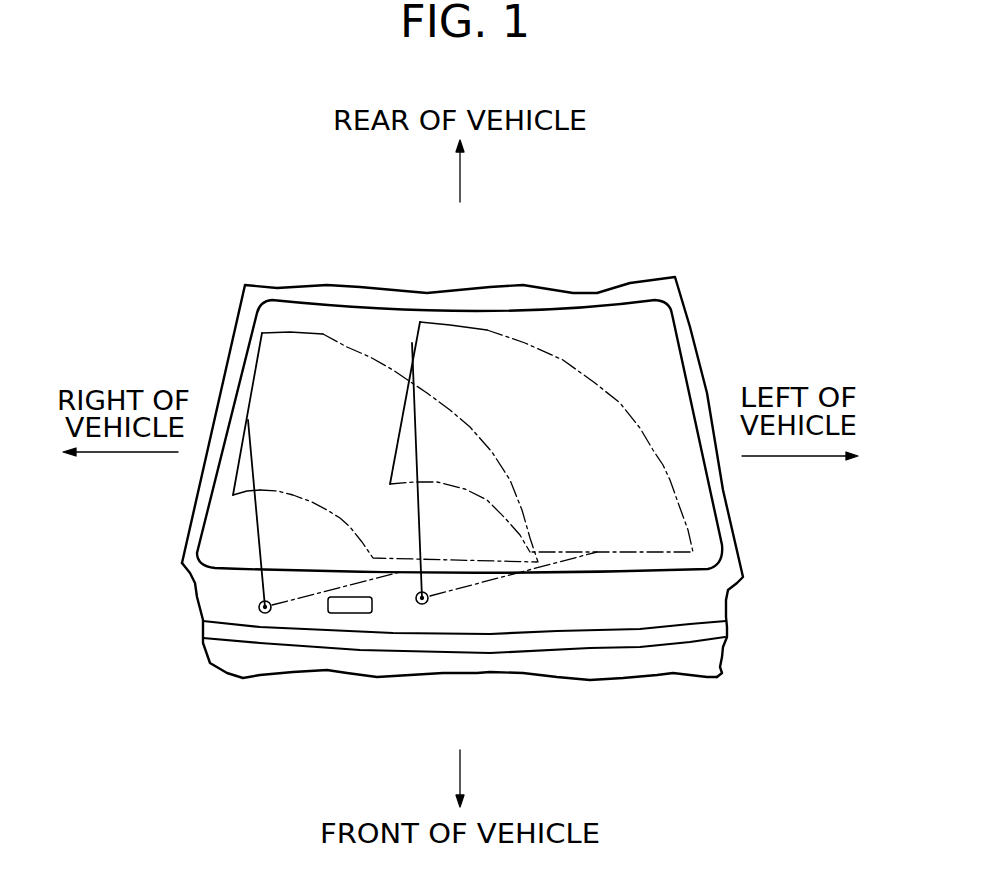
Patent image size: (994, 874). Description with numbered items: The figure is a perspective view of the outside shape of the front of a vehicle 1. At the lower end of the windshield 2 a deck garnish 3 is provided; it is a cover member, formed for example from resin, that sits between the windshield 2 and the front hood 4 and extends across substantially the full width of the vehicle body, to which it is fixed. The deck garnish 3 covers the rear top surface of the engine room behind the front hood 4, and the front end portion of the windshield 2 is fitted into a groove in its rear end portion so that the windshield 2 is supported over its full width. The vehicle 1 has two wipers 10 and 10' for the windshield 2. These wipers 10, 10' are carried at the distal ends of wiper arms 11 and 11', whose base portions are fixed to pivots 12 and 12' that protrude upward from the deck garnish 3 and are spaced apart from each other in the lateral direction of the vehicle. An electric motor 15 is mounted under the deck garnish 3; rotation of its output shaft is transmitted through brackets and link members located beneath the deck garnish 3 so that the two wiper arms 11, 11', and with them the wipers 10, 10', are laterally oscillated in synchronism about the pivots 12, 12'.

The vehicle 1 is at (349, 256).
The windshield 2 is at (662, 348).
The deck garnish 3 is at (703, 593).
The front hood 4 is at (685, 658).
The wiper 10 is at (352, 465).
The wiper 10' is at (541, 418).
The wiper arm 11 is at (199, 437).
The wiper arm 11' is at (401, 525).
The pivot 12 is at (323, 653).
The pivot 12' is at (506, 640).
The electric motor 15 is at (349, 614).